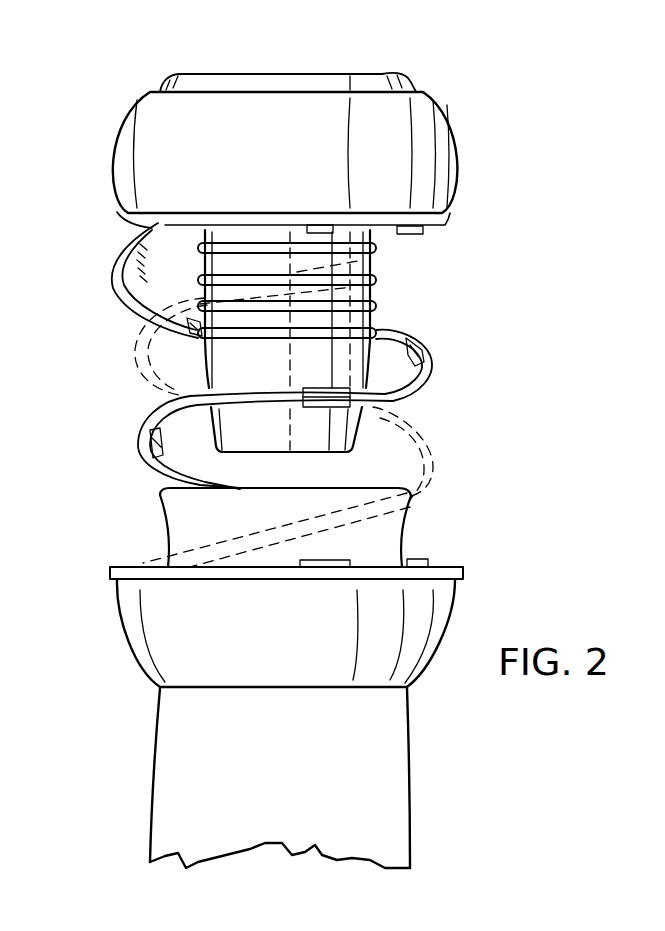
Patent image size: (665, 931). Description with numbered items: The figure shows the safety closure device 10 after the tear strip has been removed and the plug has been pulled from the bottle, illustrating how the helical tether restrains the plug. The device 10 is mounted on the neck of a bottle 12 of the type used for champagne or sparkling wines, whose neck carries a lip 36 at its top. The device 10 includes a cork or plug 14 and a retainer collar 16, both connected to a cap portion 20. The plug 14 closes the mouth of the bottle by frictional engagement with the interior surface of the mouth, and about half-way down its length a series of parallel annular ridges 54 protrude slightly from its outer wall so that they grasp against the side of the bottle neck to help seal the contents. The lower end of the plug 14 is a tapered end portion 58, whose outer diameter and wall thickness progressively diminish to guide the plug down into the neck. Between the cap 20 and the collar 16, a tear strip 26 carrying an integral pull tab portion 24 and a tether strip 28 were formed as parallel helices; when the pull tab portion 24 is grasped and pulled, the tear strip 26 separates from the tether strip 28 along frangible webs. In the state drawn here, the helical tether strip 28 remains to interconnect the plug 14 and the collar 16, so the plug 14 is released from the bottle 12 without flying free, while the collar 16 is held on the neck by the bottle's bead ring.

The safety closure device 10 is at (463, 128).
The bottle 12 is at (411, 797).
The plug 14 is at (262, 381).
The retainer collar 16 is at (261, 651).
The cap portion 20 is at (253, 146).
The pull tab portion 24 is at (370, 264).
The tear strip 26 is at (127, 352).
The tether strip 28 is at (122, 265).
The lip 36 is at (160, 492).
The annular ridges 54 is at (374, 282).
The tapered end portion 58 is at (358, 452).